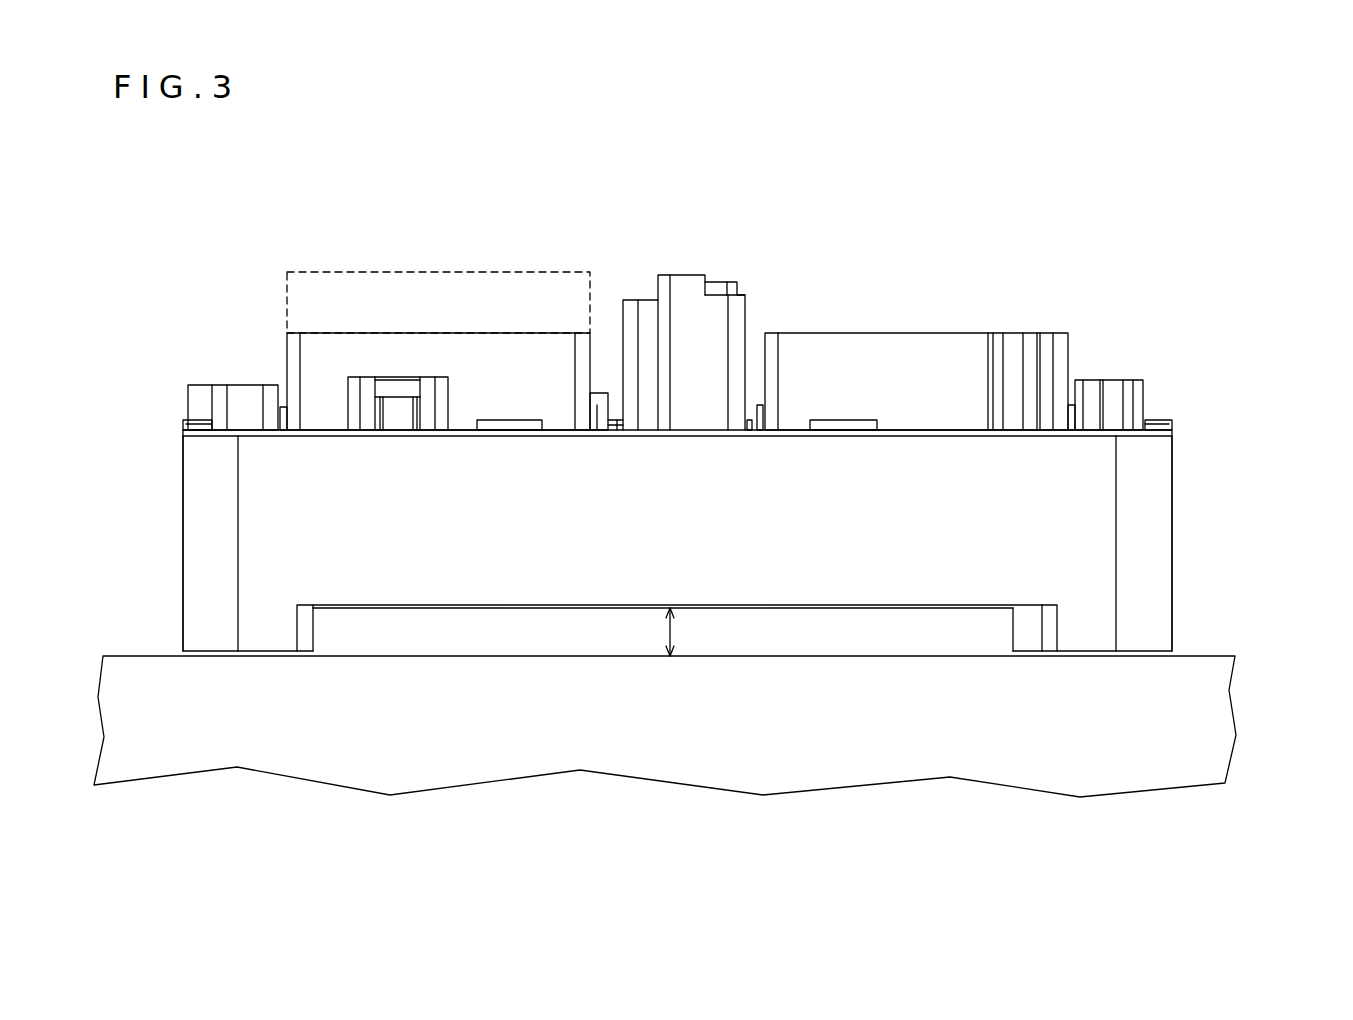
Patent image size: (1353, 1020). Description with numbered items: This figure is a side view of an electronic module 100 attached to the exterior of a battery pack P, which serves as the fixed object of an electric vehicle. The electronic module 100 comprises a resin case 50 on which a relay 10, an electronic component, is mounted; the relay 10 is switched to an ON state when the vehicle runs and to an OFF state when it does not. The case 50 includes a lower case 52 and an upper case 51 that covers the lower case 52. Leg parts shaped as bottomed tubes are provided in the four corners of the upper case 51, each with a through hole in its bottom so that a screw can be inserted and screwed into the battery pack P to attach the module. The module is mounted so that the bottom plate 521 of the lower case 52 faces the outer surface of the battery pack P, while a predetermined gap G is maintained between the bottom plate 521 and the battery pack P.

The electronic module 100 is at (1166, 163).
The relay 10 is at (432, 272).
The case 50 is at (904, 280).
The upper case 51 is at (1173, 455).
The lower case 52 is at (995, 618).
The bottom plate 521 is at (480, 612).
The gap G is at (657, 632).
The battery pack P is at (1254, 662).